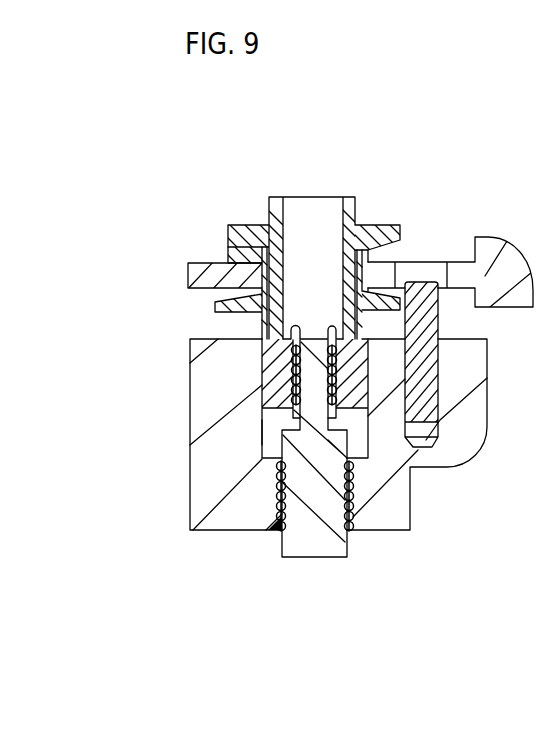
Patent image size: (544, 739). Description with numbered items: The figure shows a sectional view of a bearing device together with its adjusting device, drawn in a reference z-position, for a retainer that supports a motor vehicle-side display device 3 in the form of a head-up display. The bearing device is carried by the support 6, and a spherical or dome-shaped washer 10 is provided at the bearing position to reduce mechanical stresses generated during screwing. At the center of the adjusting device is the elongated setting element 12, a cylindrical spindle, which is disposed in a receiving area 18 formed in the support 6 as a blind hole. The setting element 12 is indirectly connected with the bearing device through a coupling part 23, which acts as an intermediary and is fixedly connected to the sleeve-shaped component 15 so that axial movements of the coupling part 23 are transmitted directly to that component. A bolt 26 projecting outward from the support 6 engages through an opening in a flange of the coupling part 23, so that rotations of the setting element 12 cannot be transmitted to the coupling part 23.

The display device 3 is at (188, 277).
The support 6 is at (217, 488).
The spherical or dome-shaped washer 10 is at (228, 253).
The setting element 12 is at (320, 534).
The sleeve-shaped component 15 is at (377, 236).
The receiving area 18 is at (285, 427).
The coupling part 23 is at (280, 358).
The bolt 26 is at (423, 307).